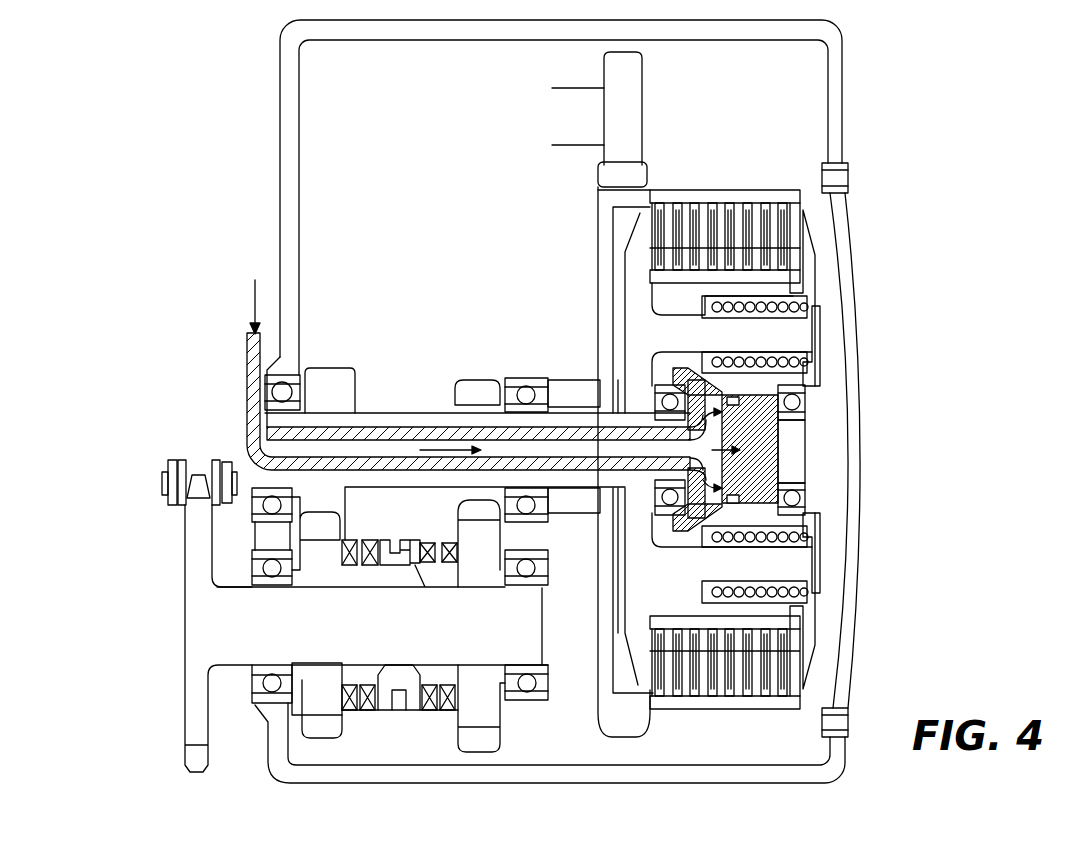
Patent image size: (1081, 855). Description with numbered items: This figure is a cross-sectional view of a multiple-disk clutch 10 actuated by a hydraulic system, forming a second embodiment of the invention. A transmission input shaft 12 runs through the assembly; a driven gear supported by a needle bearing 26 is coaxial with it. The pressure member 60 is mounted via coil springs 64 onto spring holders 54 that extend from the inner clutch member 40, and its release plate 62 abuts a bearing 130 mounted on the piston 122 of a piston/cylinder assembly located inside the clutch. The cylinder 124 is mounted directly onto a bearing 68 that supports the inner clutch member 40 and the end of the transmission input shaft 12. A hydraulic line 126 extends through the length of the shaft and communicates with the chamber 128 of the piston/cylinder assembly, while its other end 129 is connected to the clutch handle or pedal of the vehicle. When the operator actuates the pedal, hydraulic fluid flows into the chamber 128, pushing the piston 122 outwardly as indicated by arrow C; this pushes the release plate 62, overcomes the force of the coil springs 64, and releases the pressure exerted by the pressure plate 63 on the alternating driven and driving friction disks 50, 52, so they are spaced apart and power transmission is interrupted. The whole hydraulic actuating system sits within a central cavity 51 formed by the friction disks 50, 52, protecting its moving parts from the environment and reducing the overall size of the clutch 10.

The multiple-disk clutch 10 is at (820, 136).
The transmission input shaft 12 is at (366, 413).
The needle bearing 26 is at (572, 492).
The inner clutch member 40 is at (633, 326).
The driven friction disks 50 is at (752, 200).
The central cavity 51 is at (665, 530).
The driving friction disks 52 is at (720, 272).
The spring holders 54 is at (790, 348).
The pressure member 60 is at (805, 283).
The release plate 62 is at (810, 520).
The pressure plate 63 is at (800, 640).
The coil springs 64 is at (806, 307).
The bearing 68 is at (658, 396).
The piston 122 is at (770, 440).
The cylinder 124 is at (740, 505).
The hydraulic line 126 is at (437, 413).
The chamber 128 is at (797, 402).
The other end of the hydraulic line 129 is at (247, 366).
The bearing 130 is at (797, 486).
The arrow C is at (795, 480).